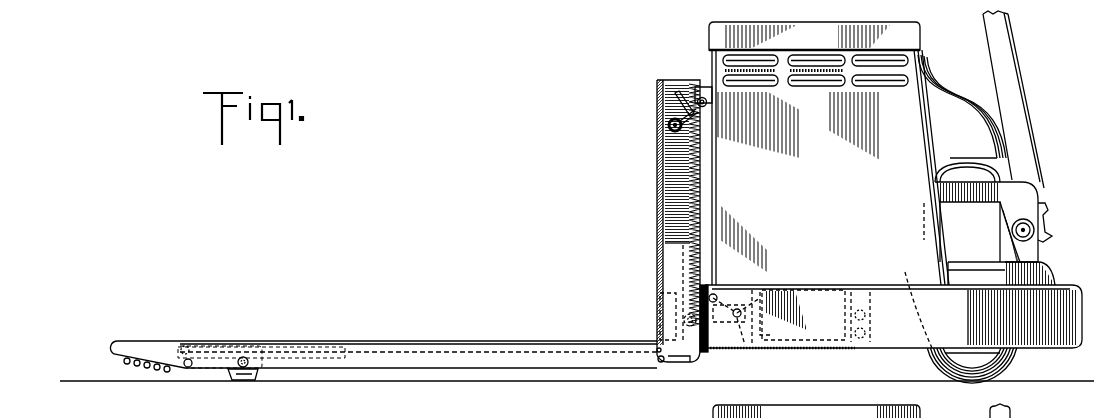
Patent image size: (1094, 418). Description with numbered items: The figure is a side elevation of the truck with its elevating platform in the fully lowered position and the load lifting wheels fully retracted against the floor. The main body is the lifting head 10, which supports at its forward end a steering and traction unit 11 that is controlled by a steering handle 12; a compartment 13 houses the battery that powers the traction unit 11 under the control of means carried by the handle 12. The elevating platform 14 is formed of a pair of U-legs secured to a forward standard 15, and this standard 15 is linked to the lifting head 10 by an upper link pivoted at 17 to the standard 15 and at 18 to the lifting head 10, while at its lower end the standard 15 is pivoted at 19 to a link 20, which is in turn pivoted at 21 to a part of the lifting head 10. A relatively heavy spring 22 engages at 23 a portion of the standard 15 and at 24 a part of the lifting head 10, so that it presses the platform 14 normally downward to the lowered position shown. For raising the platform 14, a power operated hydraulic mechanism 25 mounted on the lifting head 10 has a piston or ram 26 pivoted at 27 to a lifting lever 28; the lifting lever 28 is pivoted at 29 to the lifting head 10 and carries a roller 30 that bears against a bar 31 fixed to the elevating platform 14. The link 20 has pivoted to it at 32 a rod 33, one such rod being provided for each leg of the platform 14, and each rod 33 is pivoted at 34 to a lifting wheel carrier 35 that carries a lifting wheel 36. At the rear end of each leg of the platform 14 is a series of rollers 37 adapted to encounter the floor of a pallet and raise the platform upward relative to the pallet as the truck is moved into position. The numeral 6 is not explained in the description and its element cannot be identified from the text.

The rod 6 is at (686, 117).
The lifting head 10 is at (885, 300).
The steering and traction unit 11 is at (976, 224).
The steering handle 12 is at (1005, 70).
The compartment 13 is at (821, 188).
The elevating platform 14 is at (503, 332).
The forward standard 15 is at (656, 200).
The pivot 17 is at (667, 125).
The pivot 18 is at (703, 96).
The pivot 19 is at (662, 363).
The link 20 is at (678, 362).
The pivot 21 is at (708, 352).
The spring 22 is at (700, 205).
The spring engagement point 23 is at (681, 100).
The spring engagement point 24 is at (700, 308).
The power operated hydraulic mechanism 25 is at (818, 292).
The piston or ram 26 is at (755, 300).
The pivot 27 is at (745, 347).
The lifting lever 28 is at (738, 308).
The pivot 29 is at (716, 293).
The roller 30 is at (684, 320).
The bar 31 is at (672, 292).
The pivot 32 is at (658, 358).
The rod 33 is at (436, 342).
The pivot 34 is at (190, 346).
The lifting wheel carrier 35 is at (241, 368).
The lifting wheel 36 is at (250, 381).
The rollers 37 is at (166, 374).